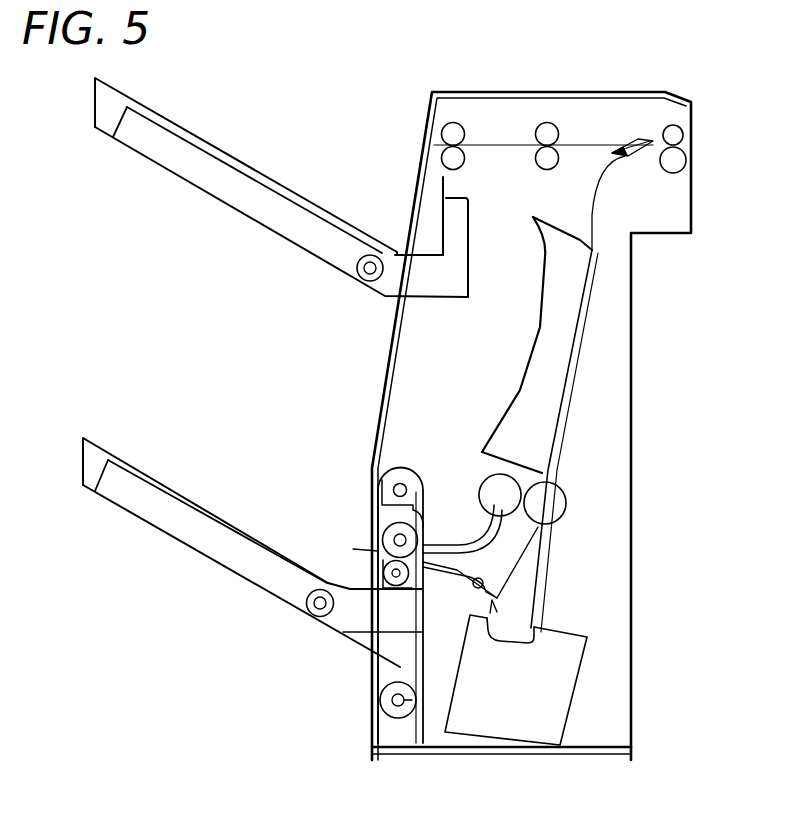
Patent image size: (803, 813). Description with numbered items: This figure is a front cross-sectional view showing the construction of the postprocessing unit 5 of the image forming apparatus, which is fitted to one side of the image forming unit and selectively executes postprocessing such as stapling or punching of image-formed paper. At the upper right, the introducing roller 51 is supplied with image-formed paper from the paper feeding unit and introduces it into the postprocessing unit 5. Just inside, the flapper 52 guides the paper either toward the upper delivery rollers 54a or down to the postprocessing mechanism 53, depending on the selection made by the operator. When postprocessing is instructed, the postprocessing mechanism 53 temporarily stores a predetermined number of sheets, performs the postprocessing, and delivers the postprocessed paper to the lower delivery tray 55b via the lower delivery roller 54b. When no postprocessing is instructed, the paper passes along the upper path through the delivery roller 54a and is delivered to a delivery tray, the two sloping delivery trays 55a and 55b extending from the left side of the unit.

The postprocessing unit 5 is at (622, 91).
The introducing roller 51 is at (691, 182).
The flapper 52 is at (632, 142).
The postprocessing mechanism 53 is at (550, 595).
The delivery roller 54a is at (545, 122).
The delivery roller 54b is at (375, 520).
The delivery tray 55a is at (192, 132).
The delivery tray 55b is at (152, 470).